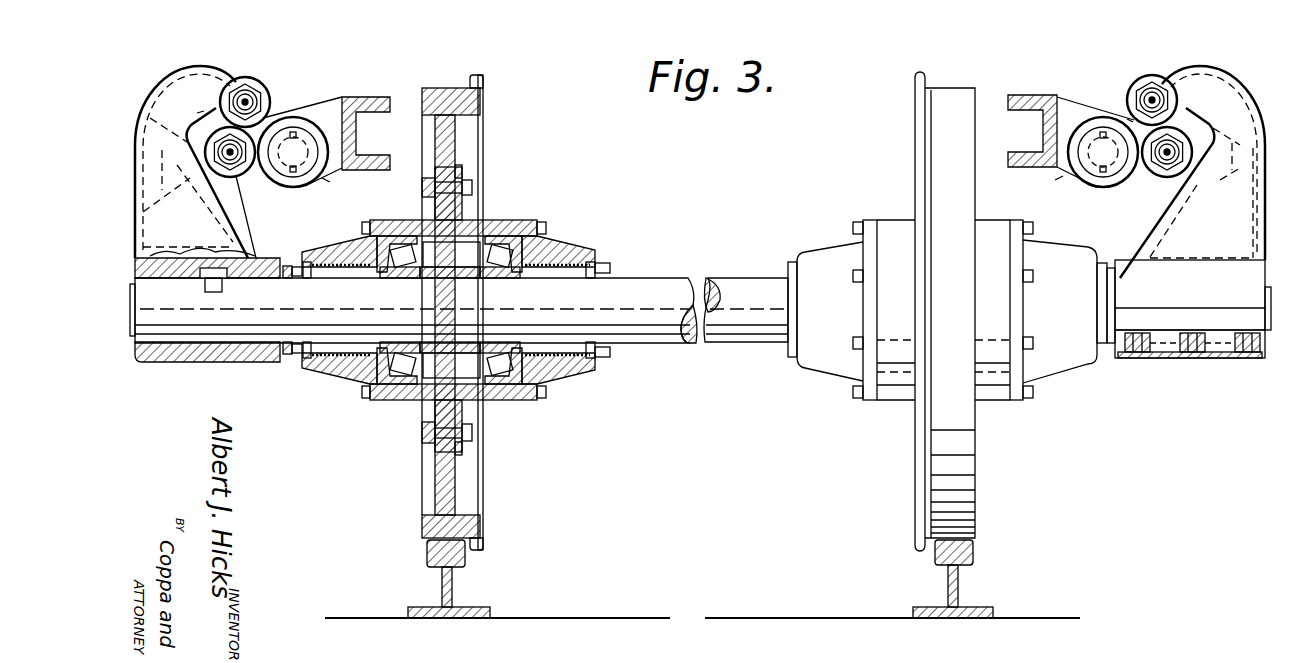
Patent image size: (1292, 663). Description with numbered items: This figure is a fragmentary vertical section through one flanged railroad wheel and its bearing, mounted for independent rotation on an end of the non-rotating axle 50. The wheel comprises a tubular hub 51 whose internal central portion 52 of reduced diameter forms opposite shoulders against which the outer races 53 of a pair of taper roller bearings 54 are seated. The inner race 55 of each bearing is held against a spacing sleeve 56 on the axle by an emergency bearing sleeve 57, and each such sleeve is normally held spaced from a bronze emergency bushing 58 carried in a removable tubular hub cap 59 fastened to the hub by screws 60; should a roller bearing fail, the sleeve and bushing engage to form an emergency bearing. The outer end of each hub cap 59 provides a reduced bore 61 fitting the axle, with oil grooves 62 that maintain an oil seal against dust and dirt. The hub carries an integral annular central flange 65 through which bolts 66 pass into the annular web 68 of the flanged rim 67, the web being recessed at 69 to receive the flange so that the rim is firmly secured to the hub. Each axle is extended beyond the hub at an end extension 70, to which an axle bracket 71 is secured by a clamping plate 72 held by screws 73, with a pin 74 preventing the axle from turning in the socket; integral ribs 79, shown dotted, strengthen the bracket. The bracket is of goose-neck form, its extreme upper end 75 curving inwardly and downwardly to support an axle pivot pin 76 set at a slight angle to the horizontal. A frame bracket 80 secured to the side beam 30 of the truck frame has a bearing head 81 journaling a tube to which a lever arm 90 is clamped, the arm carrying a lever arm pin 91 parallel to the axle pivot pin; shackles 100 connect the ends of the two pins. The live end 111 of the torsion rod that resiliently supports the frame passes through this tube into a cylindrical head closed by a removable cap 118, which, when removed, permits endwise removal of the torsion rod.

The longitudinal side beam 30 is at (699, 132).
The axle 50 is at (705, 343).
The tubular hub 51 is at (398, 405).
The internal central portion of reduced diameter 52 is at (472, 377).
The outer race 53 is at (482, 252).
The taper roller bearing 54 is at (393, 281).
The inner race 55 is at (478, 280).
The spacing sleeve 56 is at (458, 345).
The emergency bearing sleeve 57 is at (337, 281).
The bronze emergency bushing 58 is at (318, 366).
The tubular hub cap 59 is at (322, 248).
The screw 60 is at (540, 222).
The reduced bore 61 is at (602, 280).
The oil groove 62 is at (612, 271).
The central flange 65 is at (460, 205).
The bolt 66 is at (470, 188).
The flanged rim 67 is at (698, 301).
The annular web 68 is at (455, 138).
The recess 69 is at (457, 170).
The end extension 70 is at (292, 266).
The axle bracket 71 is at (179, 66).
The clamping plate 72 is at (220, 362).
The screw 73 is at (1243, 348).
The pin 74 is at (210, 292).
The extreme upper end 75 is at (213, 105).
The axle pivot pin 76 is at (248, 98).
The rib 79 is at (697, 153).
The frame bracket 80 is at (698, 121).
The bearing head 81 is at (300, 115).
The lever arm 90 is at (266, 183).
The lever arm pin 91 is at (233, 160).
The shackle 100 is at (197, 112).
The live end 111 is at (322, 178).
The removable cap 118 is at (1094, 163).